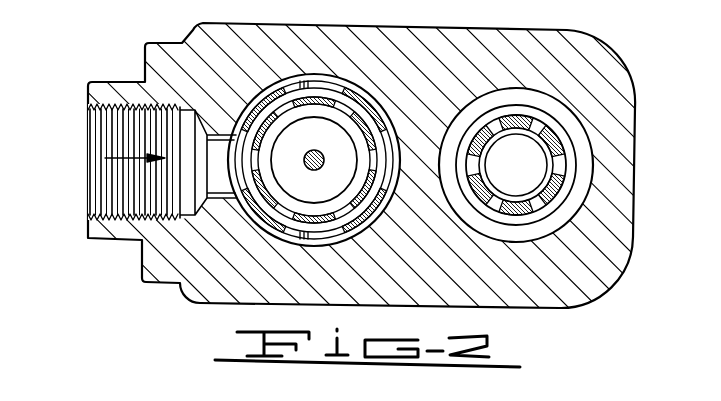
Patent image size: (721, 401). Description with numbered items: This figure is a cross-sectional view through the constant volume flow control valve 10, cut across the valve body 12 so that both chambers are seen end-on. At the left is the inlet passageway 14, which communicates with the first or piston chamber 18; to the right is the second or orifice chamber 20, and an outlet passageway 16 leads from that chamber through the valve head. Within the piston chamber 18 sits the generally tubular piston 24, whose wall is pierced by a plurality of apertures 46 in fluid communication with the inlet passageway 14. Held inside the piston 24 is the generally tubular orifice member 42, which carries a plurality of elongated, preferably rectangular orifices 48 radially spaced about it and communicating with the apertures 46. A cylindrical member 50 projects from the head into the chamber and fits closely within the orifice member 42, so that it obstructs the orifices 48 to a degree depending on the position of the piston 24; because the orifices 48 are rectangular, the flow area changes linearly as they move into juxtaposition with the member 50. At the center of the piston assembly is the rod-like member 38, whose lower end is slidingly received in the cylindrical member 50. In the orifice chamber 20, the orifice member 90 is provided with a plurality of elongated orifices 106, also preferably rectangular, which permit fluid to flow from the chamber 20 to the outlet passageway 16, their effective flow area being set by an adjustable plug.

The constant volume flow control valve 10 is at (652, 86).
The valve body 12 is at (622, 145).
The inlet passageway 14 is at (107, 130).
The outlet passageway 16 is at (530, 165).
The piston chamber 18 is at (262, 102).
The orifice chamber 20 is at (555, 105).
The piston 24 is at (284, 88).
The rod-like member 38 is at (304, 167).
The orifice member 42 is at (358, 127).
The apertures 46 is at (310, 92).
The orifices 48 is at (338, 118).
The cylindrical member 50 is at (338, 178).
The orifice member 90 is at (527, 112).
The orifices 106 is at (540, 208).